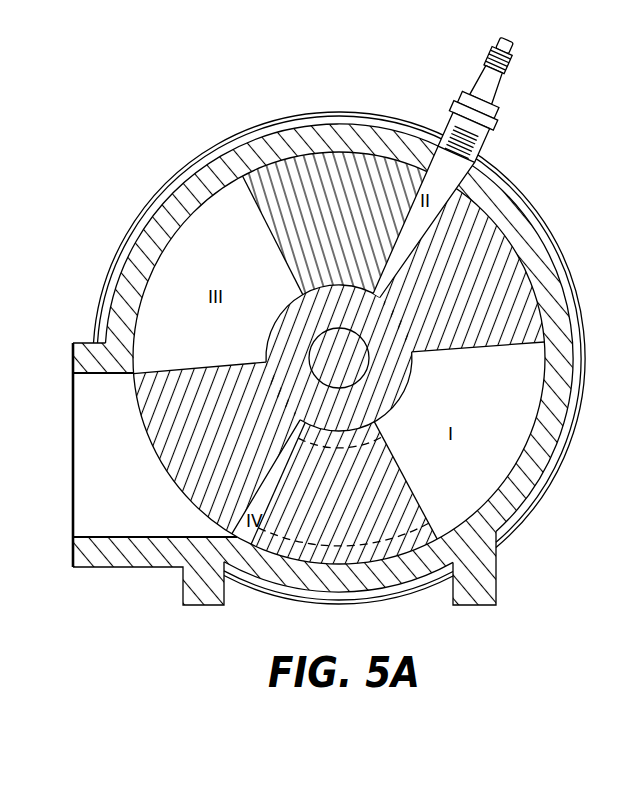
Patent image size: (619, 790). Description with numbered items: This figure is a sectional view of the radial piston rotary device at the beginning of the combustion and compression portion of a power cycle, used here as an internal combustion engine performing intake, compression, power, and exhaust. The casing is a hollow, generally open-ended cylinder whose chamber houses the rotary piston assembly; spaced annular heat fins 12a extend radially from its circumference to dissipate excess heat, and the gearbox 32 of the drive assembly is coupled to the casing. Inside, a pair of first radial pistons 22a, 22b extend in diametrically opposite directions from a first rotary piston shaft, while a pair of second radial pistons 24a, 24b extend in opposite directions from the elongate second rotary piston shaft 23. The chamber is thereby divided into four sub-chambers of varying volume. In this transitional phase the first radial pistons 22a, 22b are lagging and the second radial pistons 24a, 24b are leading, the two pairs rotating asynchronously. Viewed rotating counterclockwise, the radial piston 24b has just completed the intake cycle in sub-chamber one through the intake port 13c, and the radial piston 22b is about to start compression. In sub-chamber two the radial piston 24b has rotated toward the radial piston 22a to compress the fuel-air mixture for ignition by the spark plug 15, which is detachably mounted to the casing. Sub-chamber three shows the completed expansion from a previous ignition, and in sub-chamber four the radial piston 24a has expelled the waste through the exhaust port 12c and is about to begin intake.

The heat fins 12a is at (275, 120).
The exhaust port 12c is at (96, 416).
The intake port 13c is at (412, 455).
The spark plug 15 is at (510, 67).
The first radial piston 22a is at (258, 220).
The first radial piston 22b is at (438, 528).
The second rotary piston shaft 23 is at (318, 345).
The second radial piston 24a is at (180, 503).
The second radial piston 24b is at (482, 349).
The gearbox 32 is at (533, 212).